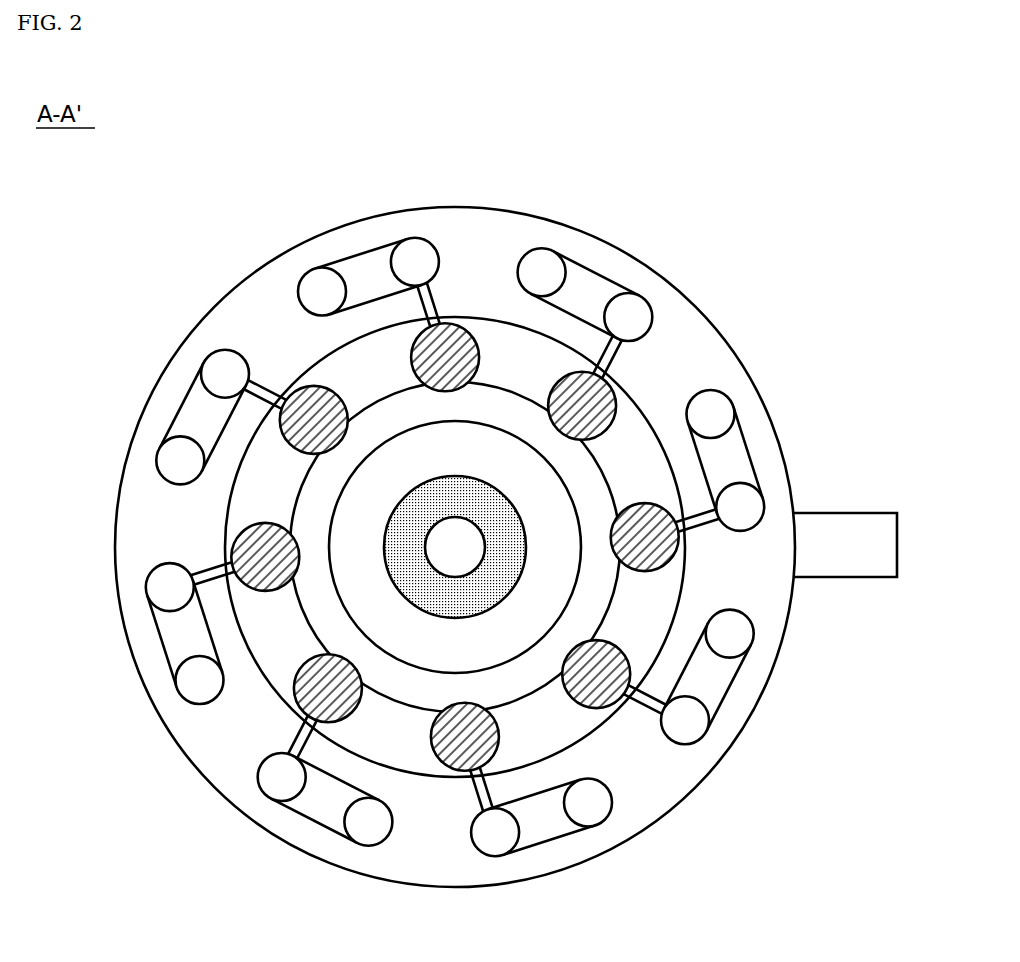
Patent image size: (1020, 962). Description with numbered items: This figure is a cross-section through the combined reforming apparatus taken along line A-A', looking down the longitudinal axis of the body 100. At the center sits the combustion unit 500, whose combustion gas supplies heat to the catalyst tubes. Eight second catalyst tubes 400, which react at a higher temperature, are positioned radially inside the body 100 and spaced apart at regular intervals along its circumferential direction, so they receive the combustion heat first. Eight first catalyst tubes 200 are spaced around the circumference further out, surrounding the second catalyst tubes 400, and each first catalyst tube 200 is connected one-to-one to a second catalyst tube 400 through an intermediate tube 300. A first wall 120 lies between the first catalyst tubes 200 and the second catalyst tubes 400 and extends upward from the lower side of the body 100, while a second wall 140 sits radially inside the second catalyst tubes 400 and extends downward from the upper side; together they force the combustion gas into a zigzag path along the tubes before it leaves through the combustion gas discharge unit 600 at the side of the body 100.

The body 100 is at (455, 514).
The first wall 120 is at (455, 318).
The second wall 140 is at (340, 497).
The first catalyst tube 200 is at (455, 498).
The intermediate tube 300 is at (630, 348).
The second catalyst tube 400 is at (612, 402).
The combustion unit 500 is at (489, 553).
The combustion gas discharge unit 600 is at (860, 471).